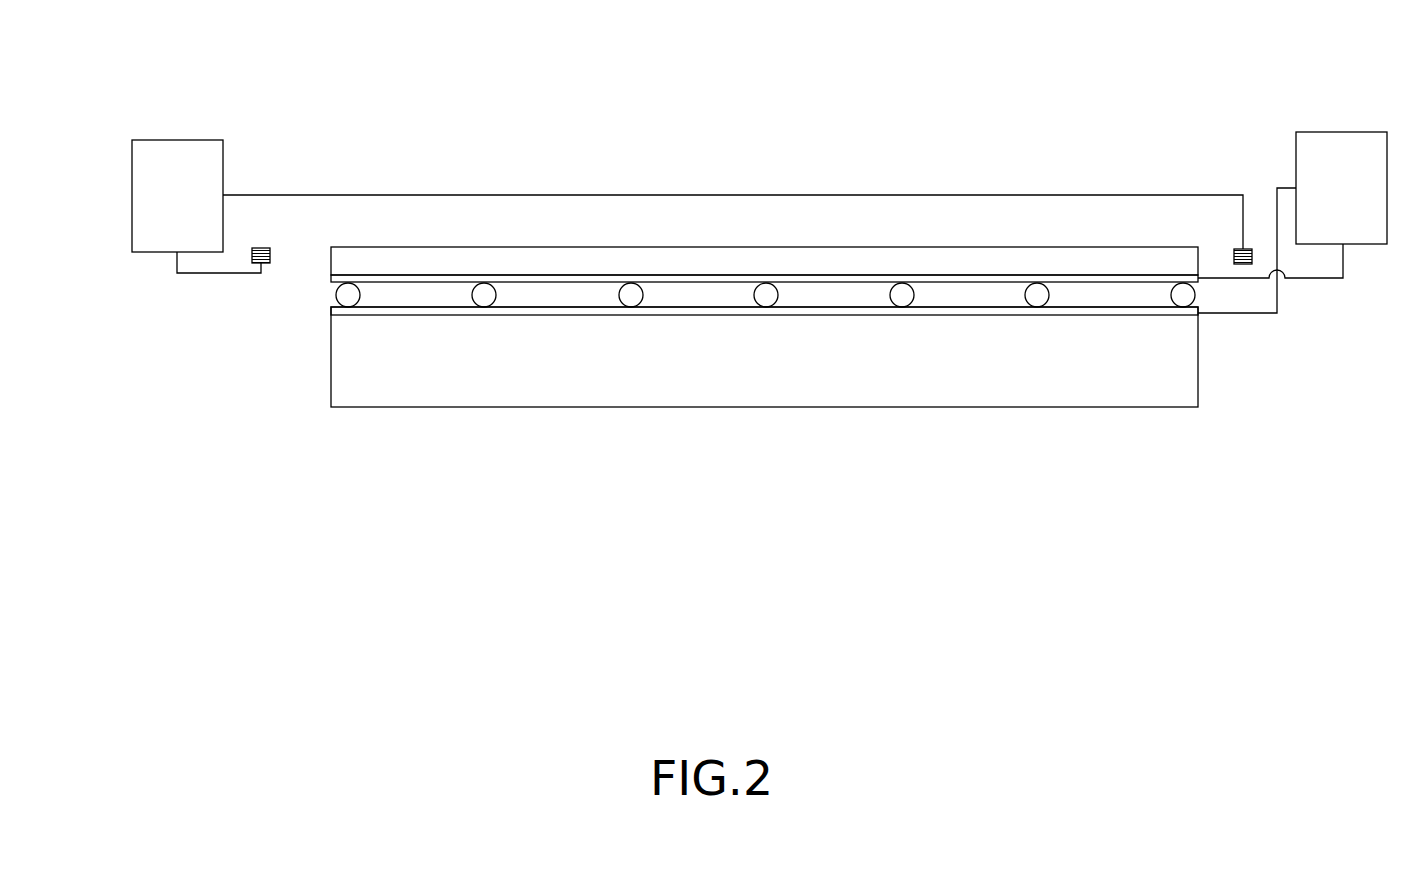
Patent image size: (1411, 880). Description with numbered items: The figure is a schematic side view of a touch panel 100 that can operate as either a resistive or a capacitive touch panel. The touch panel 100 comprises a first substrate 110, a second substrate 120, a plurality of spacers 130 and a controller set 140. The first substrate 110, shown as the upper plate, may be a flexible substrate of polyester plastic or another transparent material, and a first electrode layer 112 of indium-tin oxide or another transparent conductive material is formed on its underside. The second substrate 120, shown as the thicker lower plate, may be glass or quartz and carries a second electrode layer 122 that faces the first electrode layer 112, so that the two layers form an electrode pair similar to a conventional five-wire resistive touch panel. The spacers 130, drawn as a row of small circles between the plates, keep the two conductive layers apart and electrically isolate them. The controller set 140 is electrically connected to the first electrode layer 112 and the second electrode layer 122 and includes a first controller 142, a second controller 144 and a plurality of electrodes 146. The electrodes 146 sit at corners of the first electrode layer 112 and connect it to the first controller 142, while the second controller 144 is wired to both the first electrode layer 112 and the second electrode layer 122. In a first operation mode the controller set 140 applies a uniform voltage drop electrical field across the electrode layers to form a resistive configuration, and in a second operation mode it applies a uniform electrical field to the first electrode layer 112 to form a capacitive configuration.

The touch panel 100 is at (776, 527).
The first substrate 110 is at (352, 263).
The first electrode layer 112 is at (337, 282).
The second substrate 120 is at (431, 397).
The second electrode layer 122 is at (660, 309).
The spacers 130 is at (1194, 297).
The controller set 140 is at (120, 100).
The first controller 142 is at (182, 155).
The second controller 144 is at (1355, 145).
The electrodes 146 is at (259, 255).